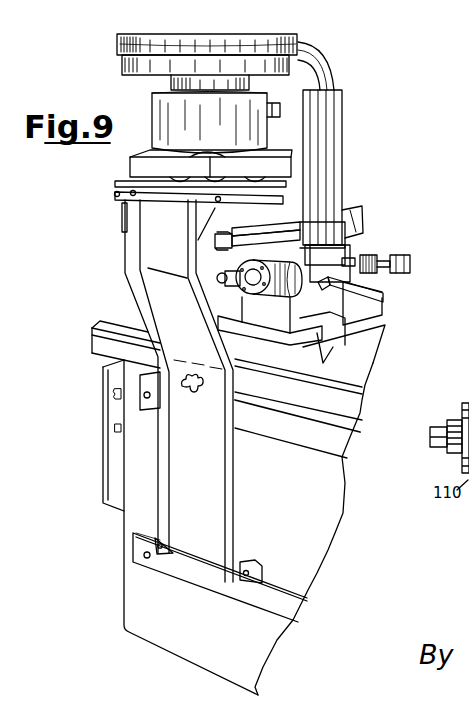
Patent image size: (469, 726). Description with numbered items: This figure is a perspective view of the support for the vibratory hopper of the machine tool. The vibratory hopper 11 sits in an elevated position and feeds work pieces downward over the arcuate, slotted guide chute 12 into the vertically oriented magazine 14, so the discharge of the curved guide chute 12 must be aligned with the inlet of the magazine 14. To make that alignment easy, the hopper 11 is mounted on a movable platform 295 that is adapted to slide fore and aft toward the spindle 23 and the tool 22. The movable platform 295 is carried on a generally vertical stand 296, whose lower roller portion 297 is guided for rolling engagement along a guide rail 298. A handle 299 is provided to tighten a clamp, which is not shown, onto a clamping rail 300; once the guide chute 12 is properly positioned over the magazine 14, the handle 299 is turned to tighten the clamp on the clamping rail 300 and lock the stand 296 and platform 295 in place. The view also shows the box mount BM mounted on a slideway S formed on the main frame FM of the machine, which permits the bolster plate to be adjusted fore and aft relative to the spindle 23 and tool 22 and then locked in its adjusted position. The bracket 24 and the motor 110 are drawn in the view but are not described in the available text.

The vibratory hopper 11 is at (296, 34).
The guide chute 12 is at (340, 72).
The magazine 14 is at (345, 157).
The tool 22 is at (380, 253).
The spindle 23 is at (404, 258).
The clamp bracket 24 is at (386, 294).
The box mount BM is at (345, 305).
The slideway S is at (365, 325).
The frame member FM is at (368, 375).
The motor 110 is at (274, 290).
The movable platform 295 is at (133, 210).
The vertical stand 296 is at (173, 291).
The lower roller portion 297 is at (262, 560).
The guide rail 298 is at (180, 615).
The handle 299 is at (193, 395).
The clamping rail 300 is at (282, 400).